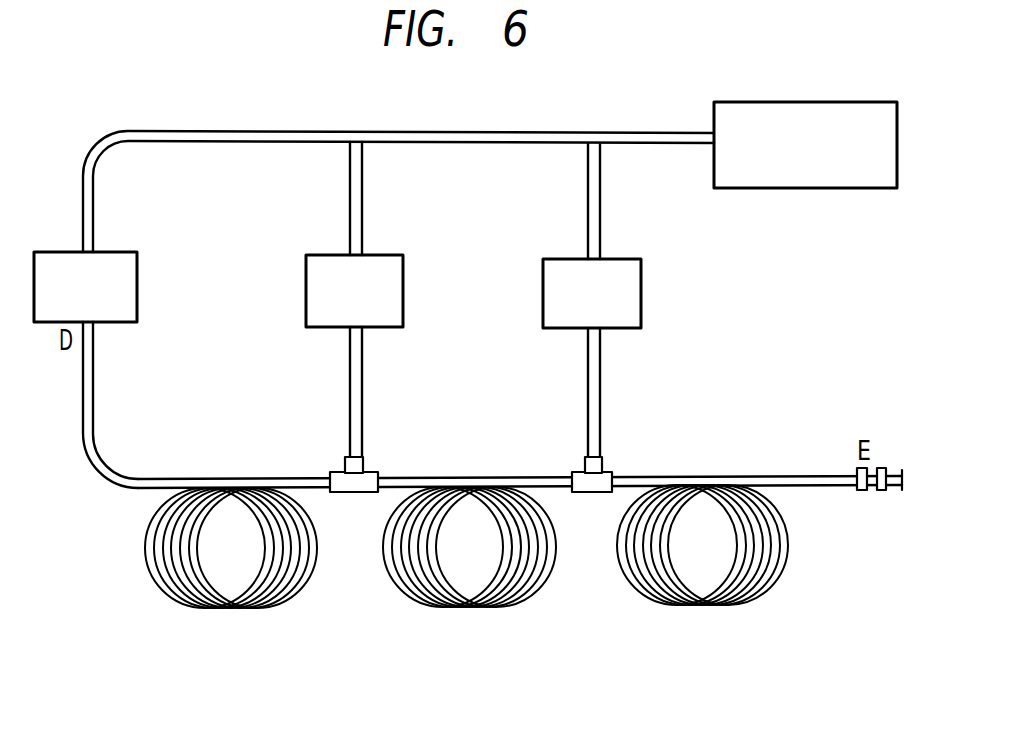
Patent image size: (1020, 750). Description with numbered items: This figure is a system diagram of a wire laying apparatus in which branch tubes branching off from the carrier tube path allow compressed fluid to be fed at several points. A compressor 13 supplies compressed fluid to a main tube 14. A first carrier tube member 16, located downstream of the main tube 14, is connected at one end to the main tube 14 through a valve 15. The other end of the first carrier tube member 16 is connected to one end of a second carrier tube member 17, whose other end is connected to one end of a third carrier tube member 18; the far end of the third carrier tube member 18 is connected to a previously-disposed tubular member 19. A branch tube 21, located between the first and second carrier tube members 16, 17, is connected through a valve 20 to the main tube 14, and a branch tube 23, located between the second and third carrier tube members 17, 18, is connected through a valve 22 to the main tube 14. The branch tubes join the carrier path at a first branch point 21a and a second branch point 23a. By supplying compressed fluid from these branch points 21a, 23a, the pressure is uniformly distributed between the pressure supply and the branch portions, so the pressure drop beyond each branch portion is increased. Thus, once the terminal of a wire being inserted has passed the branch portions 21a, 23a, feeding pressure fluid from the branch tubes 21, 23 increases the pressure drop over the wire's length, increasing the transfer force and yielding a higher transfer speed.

The compressor 13 is at (849, 102).
The main tube 14 is at (205, 130).
The valve 15 is at (122, 250).
The first carrier tube member 16 is at (316, 557).
The second carrier tube member 17 is at (547, 572).
The third carrier tube member 18 is at (768, 588).
The previously-disposed tubular member 19 is at (895, 490).
The valve 20 is at (382, 255).
The branch tube 21 is at (357, 363).
The first branch point 21a is at (352, 470).
The valve 22 is at (625, 258).
The branch tube 23 is at (595, 389).
The second branch point 23a is at (593, 470).